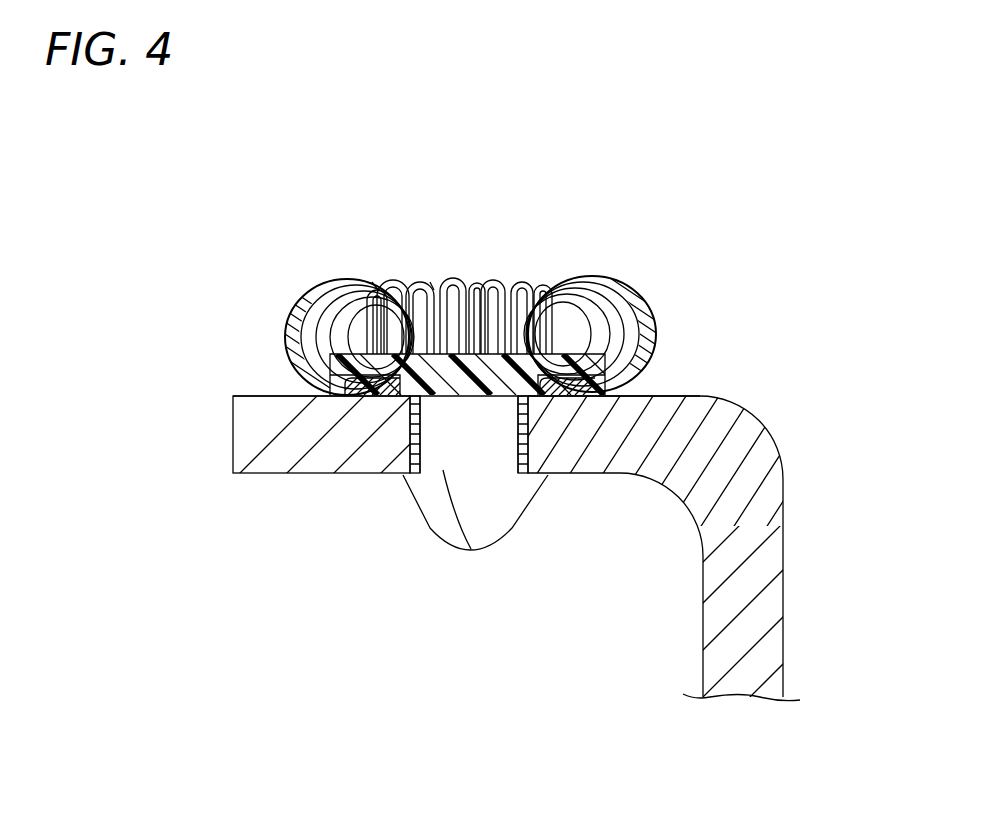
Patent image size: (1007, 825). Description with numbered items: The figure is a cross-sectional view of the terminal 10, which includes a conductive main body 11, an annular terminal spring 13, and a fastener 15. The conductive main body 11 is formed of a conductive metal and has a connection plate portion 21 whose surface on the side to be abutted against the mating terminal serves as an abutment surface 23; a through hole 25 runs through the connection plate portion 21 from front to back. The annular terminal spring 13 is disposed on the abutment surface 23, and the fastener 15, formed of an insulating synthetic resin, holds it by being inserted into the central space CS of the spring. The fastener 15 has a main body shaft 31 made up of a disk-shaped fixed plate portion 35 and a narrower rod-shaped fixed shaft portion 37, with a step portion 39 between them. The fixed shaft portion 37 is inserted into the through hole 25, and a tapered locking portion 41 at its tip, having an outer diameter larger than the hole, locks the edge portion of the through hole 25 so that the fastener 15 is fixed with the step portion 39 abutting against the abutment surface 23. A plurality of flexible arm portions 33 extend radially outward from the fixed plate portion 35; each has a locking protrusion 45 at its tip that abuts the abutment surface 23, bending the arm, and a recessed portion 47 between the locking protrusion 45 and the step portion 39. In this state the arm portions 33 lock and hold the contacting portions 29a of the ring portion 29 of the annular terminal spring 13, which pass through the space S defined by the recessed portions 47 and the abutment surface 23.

The terminal 10 is at (200, 228).
The conductive main body 11 is at (231, 437).
The annular terminal spring 13 is at (635, 282).
The fastener 15 is at (505, 288).
The connection plate portion 21 is at (250, 475).
The abutment surface 23 is at (244, 394).
The through hole 25 is at (432, 478).
The ring portion 29 is at (328, 282).
The contacting portions 29a is at (362, 396).
The main body shaft 31 is at (477, 281).
The arm portions 33 is at (292, 312).
The fixed plate portion 35 is at (389, 394).
The fixed shaft portion 37 is at (558, 400).
The step portion 39 is at (471, 552).
The locking portion 41 is at (502, 532).
The locking protrusion 45 is at (337, 394).
The recessed portion 47 is at (568, 400).
The space S is at (375, 278).
The central space CS is at (432, 280).